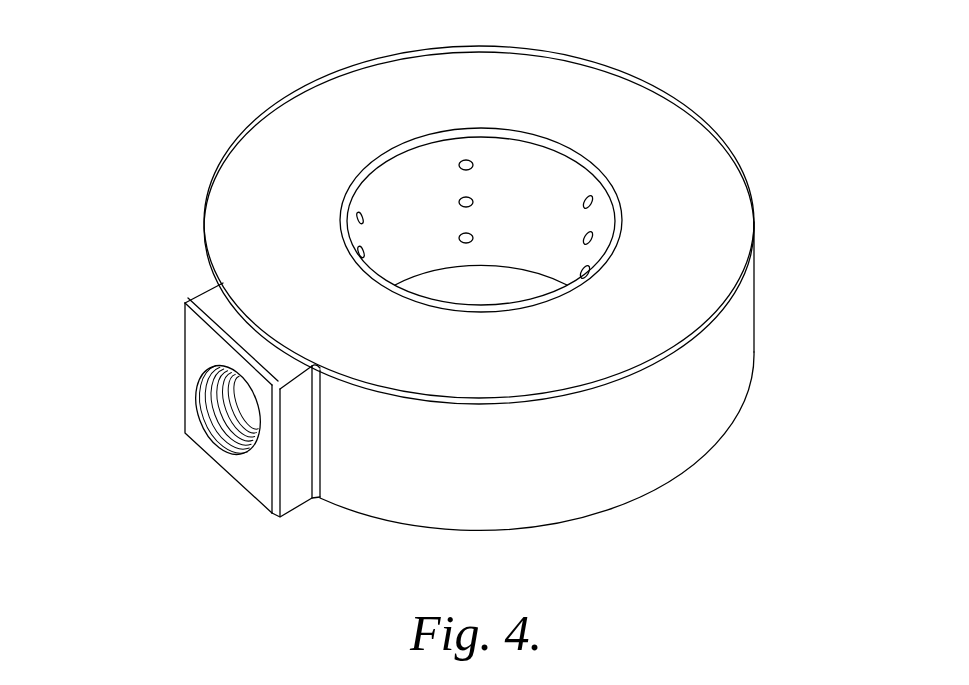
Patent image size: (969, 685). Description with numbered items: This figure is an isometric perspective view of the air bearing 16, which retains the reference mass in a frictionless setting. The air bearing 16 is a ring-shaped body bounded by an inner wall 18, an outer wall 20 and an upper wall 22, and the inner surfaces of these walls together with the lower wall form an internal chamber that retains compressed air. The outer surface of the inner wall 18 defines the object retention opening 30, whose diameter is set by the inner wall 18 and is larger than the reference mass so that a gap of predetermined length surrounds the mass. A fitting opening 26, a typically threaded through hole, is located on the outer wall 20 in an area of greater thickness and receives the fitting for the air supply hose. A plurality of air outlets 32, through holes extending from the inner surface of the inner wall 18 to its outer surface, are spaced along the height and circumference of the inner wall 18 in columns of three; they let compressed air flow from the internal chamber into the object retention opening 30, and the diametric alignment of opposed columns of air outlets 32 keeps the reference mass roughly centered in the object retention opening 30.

The air bearing 16 is at (472, 279).
The inner wall 18 is at (535, 243).
The outer wall 20 is at (733, 337).
The upper wall 22 is at (682, 130).
The fitting opening 26 is at (217, 408).
The object retention opening 30 is at (413, 200).
The air outlets 32 is at (590, 190).